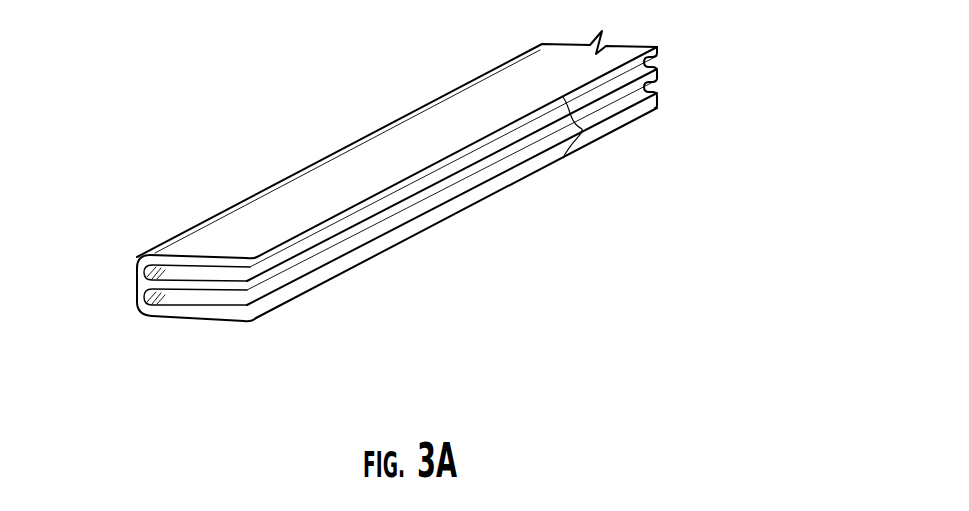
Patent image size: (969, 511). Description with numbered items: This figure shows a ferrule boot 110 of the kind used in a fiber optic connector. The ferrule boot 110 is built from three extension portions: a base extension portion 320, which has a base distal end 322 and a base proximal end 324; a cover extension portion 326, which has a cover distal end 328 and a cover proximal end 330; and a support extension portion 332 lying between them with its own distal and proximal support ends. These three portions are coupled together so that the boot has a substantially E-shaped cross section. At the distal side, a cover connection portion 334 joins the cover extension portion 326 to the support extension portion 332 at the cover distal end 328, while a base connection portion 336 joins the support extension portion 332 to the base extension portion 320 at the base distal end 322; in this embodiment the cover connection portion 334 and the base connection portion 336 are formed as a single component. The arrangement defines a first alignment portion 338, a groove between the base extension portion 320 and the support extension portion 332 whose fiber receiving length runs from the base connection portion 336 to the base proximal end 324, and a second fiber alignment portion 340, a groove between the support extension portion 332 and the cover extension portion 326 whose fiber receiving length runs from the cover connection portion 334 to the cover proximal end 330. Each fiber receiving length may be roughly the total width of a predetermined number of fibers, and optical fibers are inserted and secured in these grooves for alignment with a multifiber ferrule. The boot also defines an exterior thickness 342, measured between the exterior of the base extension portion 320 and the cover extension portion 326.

The ferrule boot 110 is at (349, 206).
The base extension portion 320 is at (465, 205).
The base distal end 322 is at (158, 310).
The base proximal end 324 is at (243, 318).
The cover extension portion 326 is at (460, 97).
The cover distal end 328 is at (158, 245).
The cover proximal end 330 is at (240, 247).
The support extension portion 332 is at (400, 213).
The cover connection portion 334 is at (127, 258).
The base connection portion 336 is at (135, 305).
The first alignment portion 338 is at (257, 298).
The second fiber alignment portion 340 is at (255, 275).
The exterior thickness 342 is at (584, 132).